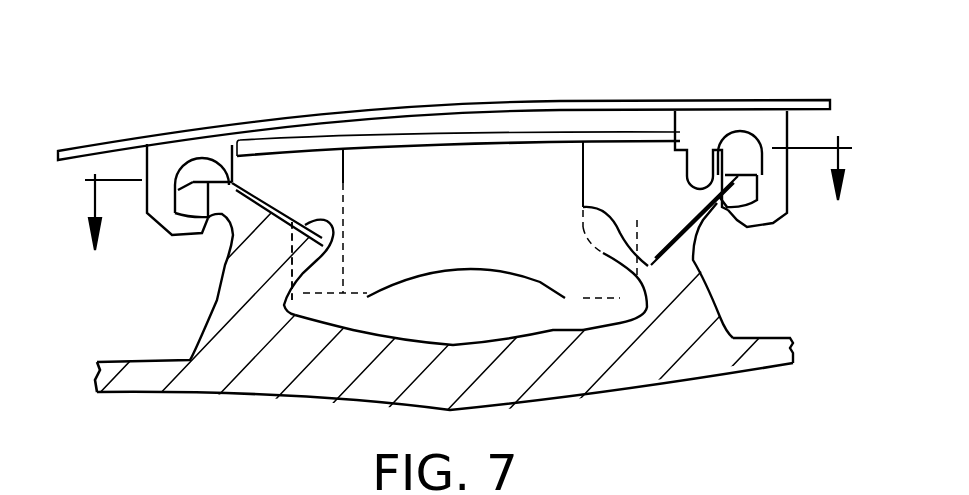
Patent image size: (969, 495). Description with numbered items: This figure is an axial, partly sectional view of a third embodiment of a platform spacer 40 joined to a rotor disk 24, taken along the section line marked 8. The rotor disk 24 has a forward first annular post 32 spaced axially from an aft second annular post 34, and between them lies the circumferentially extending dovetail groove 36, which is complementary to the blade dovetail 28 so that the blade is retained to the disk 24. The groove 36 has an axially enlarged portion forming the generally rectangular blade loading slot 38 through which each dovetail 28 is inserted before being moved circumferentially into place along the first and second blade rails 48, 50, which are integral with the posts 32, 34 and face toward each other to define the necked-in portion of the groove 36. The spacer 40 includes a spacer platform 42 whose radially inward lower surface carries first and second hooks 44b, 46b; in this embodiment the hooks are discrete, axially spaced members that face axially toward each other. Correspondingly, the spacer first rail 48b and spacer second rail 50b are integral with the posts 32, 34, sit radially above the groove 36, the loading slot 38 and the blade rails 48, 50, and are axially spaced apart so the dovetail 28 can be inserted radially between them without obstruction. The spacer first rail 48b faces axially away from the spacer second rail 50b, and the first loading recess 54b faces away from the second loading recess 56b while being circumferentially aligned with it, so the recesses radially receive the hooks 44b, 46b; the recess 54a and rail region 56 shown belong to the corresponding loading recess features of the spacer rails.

The section line of FIG. 8 is at (466, 216).
The rotor disk 24 is at (256, 389).
The dovetail 28 is at (527, 283).
The first annular post 32 is at (217, 290).
The second annular post 34 is at (708, 266).
The dovetail groove 36 is at (375, 330).
The blade loading slot 38 is at (305, 218).
The spacer 40 is at (604, 101).
The spacer platform 42 is at (418, 104).
The first hook 44b is at (153, 220).
The second hook 46b is at (787, 215).
The first blade rail 48 is at (327, 228).
The spacer first rail 48b is at (200, 182).
The second blade rail 50 is at (583, 207).
The spacer second rail 50b is at (745, 175).
The spacer first loading recess 54a is at (322, 263).
The first loading recess 54b is at (245, 198).
The right clip leg 56 is at (600, 270).
The second loading recess 56b is at (718, 200).